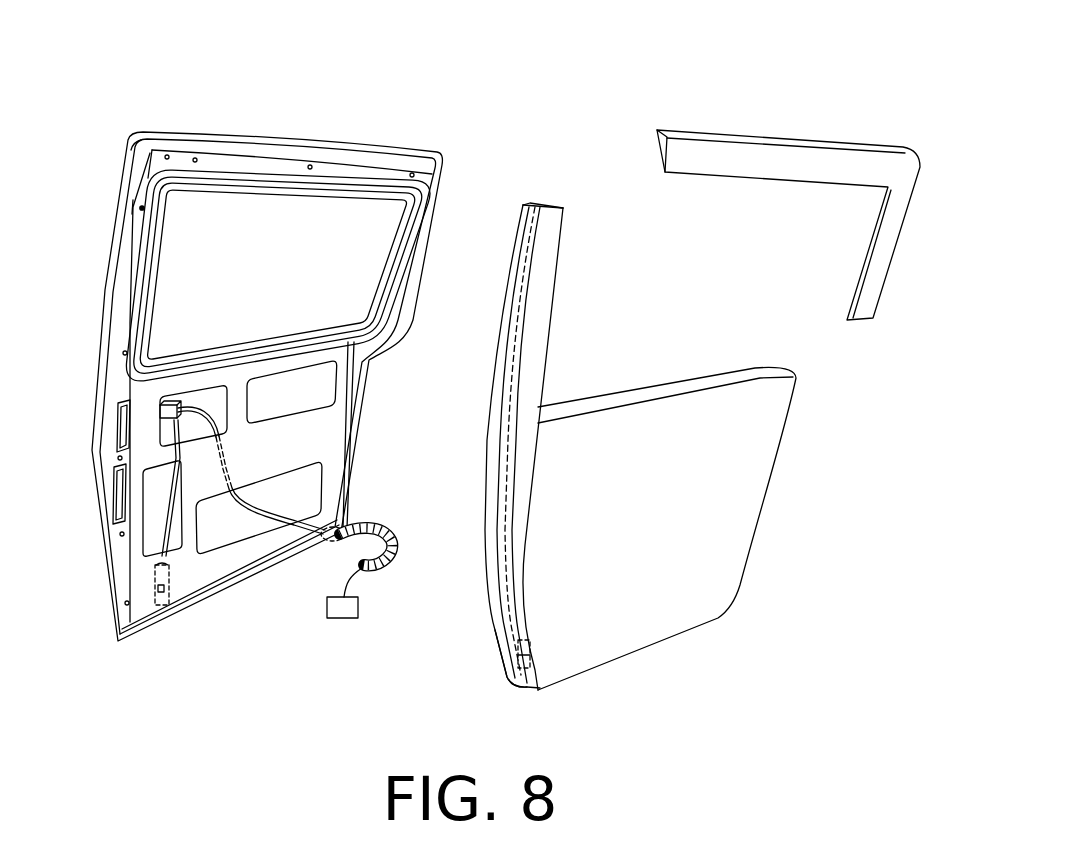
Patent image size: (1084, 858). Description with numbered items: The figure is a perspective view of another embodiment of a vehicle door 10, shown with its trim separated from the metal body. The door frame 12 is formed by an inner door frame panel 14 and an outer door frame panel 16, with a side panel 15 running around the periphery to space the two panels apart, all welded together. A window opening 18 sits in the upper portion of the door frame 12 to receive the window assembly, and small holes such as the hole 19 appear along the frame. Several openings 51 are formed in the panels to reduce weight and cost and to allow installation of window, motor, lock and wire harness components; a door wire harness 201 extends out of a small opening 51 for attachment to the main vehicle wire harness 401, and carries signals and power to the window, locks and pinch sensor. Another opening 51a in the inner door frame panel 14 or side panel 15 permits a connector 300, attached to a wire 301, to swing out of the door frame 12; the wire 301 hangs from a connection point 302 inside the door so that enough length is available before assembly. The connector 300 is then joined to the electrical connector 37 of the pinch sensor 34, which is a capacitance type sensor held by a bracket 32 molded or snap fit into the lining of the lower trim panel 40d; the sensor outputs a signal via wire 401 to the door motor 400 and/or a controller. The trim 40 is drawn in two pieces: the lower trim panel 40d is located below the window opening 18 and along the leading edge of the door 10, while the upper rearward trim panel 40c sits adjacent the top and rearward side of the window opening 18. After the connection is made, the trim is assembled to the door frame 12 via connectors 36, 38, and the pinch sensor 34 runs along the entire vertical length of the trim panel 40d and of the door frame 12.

The door 10 is at (905, 70).
The door frame 12 is at (440, 164).
The inner door frame panel 14 is at (348, 352).
The side panel 15 is at (132, 207).
The outer door frame panel 16 is at (130, 150).
The window opening 18 is at (184, 238).
The mounting hole 19 is at (142, 212).
The bracket 32 is at (508, 520).
The pinch sensor 34 is at (510, 650).
The connector 36 is at (522, 207).
The electrical connector 37 is at (535, 635).
The connector 38 is at (533, 660).
The door garnish 40 is at (743, 387).
The upper rearward trim panel 40c is at (810, 152).
The lower trim panel 40d is at (687, 598).
The openings 51 is at (206, 370).
The opening 51a is at (110, 485).
The door wire harness 201 is at (390, 530).
The connector 300 is at (163, 600).
The wire 301 is at (140, 515).
The connection point 302 is at (168, 400).
The door motor 400 is at (340, 620).
The wire 401 is at (349, 580).